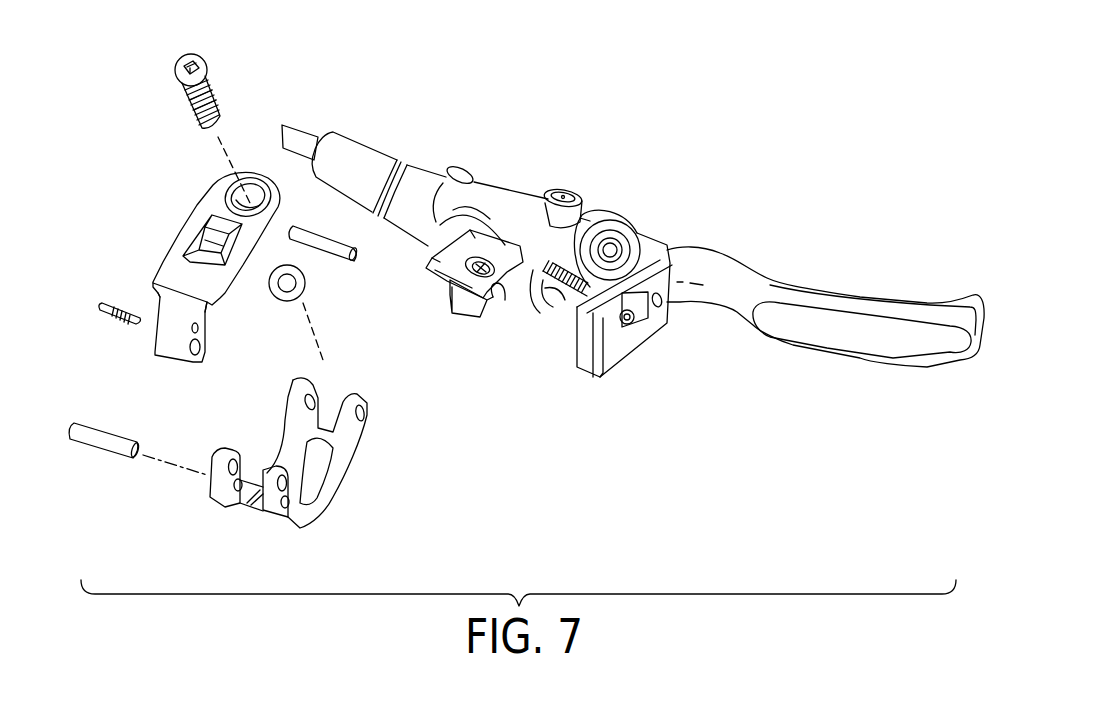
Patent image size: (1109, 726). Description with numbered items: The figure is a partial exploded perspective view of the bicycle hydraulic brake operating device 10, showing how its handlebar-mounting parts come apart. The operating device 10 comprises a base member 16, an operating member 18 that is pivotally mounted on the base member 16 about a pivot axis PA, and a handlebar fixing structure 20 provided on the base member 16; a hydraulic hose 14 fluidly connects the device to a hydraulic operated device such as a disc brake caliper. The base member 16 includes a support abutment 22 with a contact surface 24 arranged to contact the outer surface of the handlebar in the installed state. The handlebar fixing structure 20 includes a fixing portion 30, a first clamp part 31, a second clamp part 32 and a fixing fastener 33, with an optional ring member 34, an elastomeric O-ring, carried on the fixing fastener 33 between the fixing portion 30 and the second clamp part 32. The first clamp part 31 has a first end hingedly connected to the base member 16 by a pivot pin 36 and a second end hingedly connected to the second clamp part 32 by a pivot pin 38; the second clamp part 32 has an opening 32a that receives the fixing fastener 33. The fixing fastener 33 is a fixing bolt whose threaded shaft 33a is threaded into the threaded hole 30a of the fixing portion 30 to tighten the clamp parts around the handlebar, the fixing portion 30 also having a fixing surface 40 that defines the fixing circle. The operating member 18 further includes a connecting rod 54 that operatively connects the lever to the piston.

The operating device 10 is at (763, 115).
The pivot axis PA is at (630, 217).
The hydraulic hose 14 is at (306, 116).
The base member 16 is at (508, 170).
The operating member 18 is at (850, 288).
The handlebar fixing structure 20 is at (384, 500).
The support abutment 22 is at (640, 330).
The contact surface 24 is at (585, 371).
The fixing portion 30 is at (437, 281).
The threaded hole 30a is at (466, 266).
The first clamp part 31 is at (328, 511).
The second clamp part 32 is at (180, 234).
The opening 32a is at (240, 200).
The fixing fastener 33 is at (174, 66).
The threaded shaft 33a is at (220, 105).
The ring member 34 is at (285, 283).
The pivot pin 36 is at (339, 260).
The pivot pin 38 is at (109, 432).
The fixing surface 40 is at (468, 305).
The connecting rod 54 is at (570, 291).